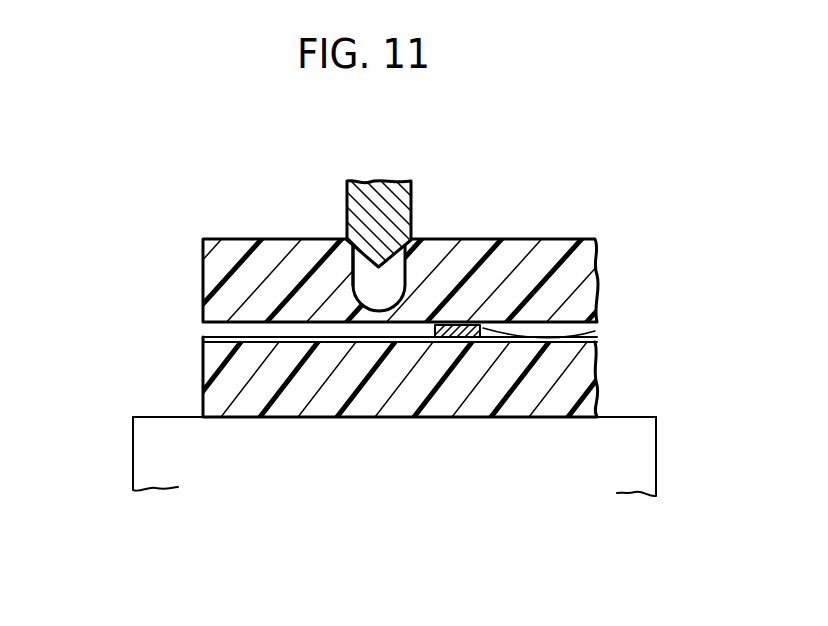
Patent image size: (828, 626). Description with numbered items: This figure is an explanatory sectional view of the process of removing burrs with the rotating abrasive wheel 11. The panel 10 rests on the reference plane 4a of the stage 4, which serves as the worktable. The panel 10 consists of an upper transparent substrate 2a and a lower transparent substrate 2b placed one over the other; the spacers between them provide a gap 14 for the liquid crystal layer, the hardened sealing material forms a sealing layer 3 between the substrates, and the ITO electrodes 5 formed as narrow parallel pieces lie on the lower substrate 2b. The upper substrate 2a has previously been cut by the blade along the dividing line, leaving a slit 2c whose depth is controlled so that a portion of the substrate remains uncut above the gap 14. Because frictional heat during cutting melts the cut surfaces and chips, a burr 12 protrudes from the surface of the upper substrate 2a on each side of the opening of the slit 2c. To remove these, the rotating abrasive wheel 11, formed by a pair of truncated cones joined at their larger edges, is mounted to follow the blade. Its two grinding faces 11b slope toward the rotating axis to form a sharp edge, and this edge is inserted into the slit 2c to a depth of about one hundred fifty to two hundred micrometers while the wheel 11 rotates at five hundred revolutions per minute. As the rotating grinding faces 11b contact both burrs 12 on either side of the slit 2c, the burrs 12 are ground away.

The panel 10 is at (194, 275).
The rotating abrasive wheel 11 is at (384, 182).
The grinding faces 11b is at (338, 267).
The burr 12 is at (330, 229).
The upper transparent substrate 2a is at (513, 258).
The lower transparent substrate 2b is at (583, 378).
The slit 2c is at (400, 286).
The sealing layer 3 is at (485, 328).
The gap 14 is at (590, 300).
The ITO electrodes 5 is at (203, 339).
The stage 4 is at (640, 458).
The reference plane 4a is at (152, 416).